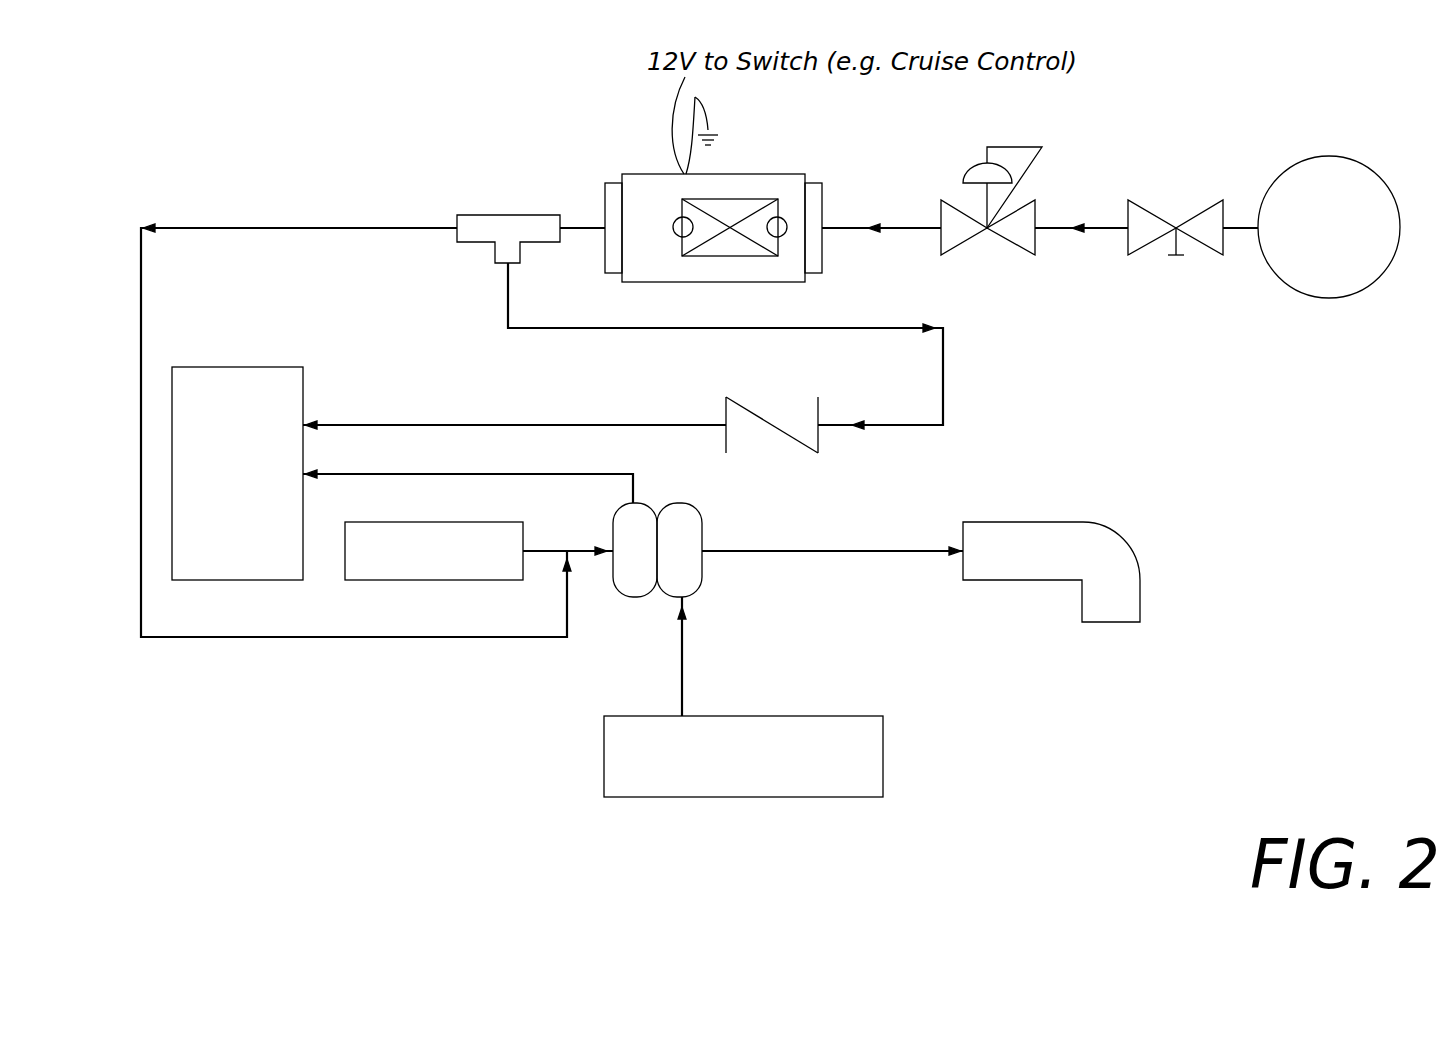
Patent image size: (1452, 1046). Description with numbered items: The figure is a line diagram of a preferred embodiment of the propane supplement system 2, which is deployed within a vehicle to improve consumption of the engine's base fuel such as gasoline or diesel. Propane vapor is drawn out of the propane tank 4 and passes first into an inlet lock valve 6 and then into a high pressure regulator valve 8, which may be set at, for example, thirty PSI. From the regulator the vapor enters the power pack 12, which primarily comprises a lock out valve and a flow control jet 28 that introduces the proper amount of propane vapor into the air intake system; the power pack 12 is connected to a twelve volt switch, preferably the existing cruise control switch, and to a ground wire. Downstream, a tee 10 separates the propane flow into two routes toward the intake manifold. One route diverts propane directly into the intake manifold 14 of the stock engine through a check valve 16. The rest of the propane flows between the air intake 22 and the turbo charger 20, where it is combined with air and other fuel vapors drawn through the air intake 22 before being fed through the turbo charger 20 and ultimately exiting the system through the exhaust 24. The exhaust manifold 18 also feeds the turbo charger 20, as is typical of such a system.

The propane supplement system 2 is at (292, 152).
The propane tank 4 is at (1278, 178).
The inlet lock valve 6 is at (1128, 198).
The high pressure regulator valve 8 is at (943, 195).
The tee 10 is at (517, 215).
The power pack 12 is at (639, 174).
The intake manifold 14 is at (449, 474).
The check valve 16 is at (740, 405).
The exhaust manifold 18 is at (743, 697).
The turbo charger 20 is at (632, 597).
The air intake 22 is at (479, 552).
The exhaust 24 is at (1095, 523).
The flow control jet 28 is at (735, 199).